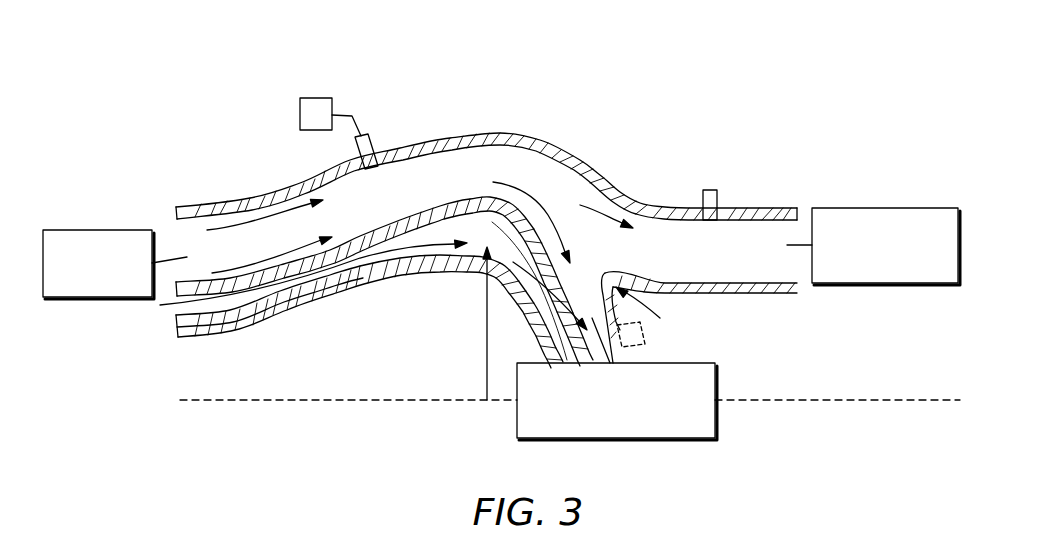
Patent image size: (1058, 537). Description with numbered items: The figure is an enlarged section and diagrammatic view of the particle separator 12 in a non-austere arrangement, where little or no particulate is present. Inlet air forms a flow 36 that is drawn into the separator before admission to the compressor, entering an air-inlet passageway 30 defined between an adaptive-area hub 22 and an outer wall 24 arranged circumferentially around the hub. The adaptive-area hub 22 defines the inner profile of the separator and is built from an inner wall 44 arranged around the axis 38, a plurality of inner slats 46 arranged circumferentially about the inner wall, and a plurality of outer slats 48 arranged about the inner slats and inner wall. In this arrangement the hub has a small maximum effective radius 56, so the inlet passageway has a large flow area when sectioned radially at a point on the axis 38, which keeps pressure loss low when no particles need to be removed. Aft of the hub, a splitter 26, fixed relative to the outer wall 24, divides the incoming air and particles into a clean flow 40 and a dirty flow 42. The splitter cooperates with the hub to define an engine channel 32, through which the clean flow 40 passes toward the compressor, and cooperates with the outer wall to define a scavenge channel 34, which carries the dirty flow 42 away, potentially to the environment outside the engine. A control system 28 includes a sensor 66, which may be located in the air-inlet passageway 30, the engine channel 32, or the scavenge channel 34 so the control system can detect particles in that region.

The particle separator 12 is at (185, 112).
The adaptive-area hub 22 is at (180, 345).
The outer wall 24 is at (515, 126).
The splitter 26 is at (699, 317).
The control system 28 is at (315, 97).
The air-inlet passageway 30 is at (97, 229).
The engine channel 32 is at (663, 363).
The scavenge channel 34 is at (866, 207).
The flow of air 36 is at (268, 222).
The axis 38 is at (293, 400).
The clean flow 40 is at (537, 200).
The dirty flow 42 is at (603, 215).
The inner wall 44 is at (396, 294).
The inner slats 46 is at (480, 229).
The outer slats 48 is at (422, 188).
The maximum effective radius 56 is at (487, 376).
The sensor 66 is at (378, 146).